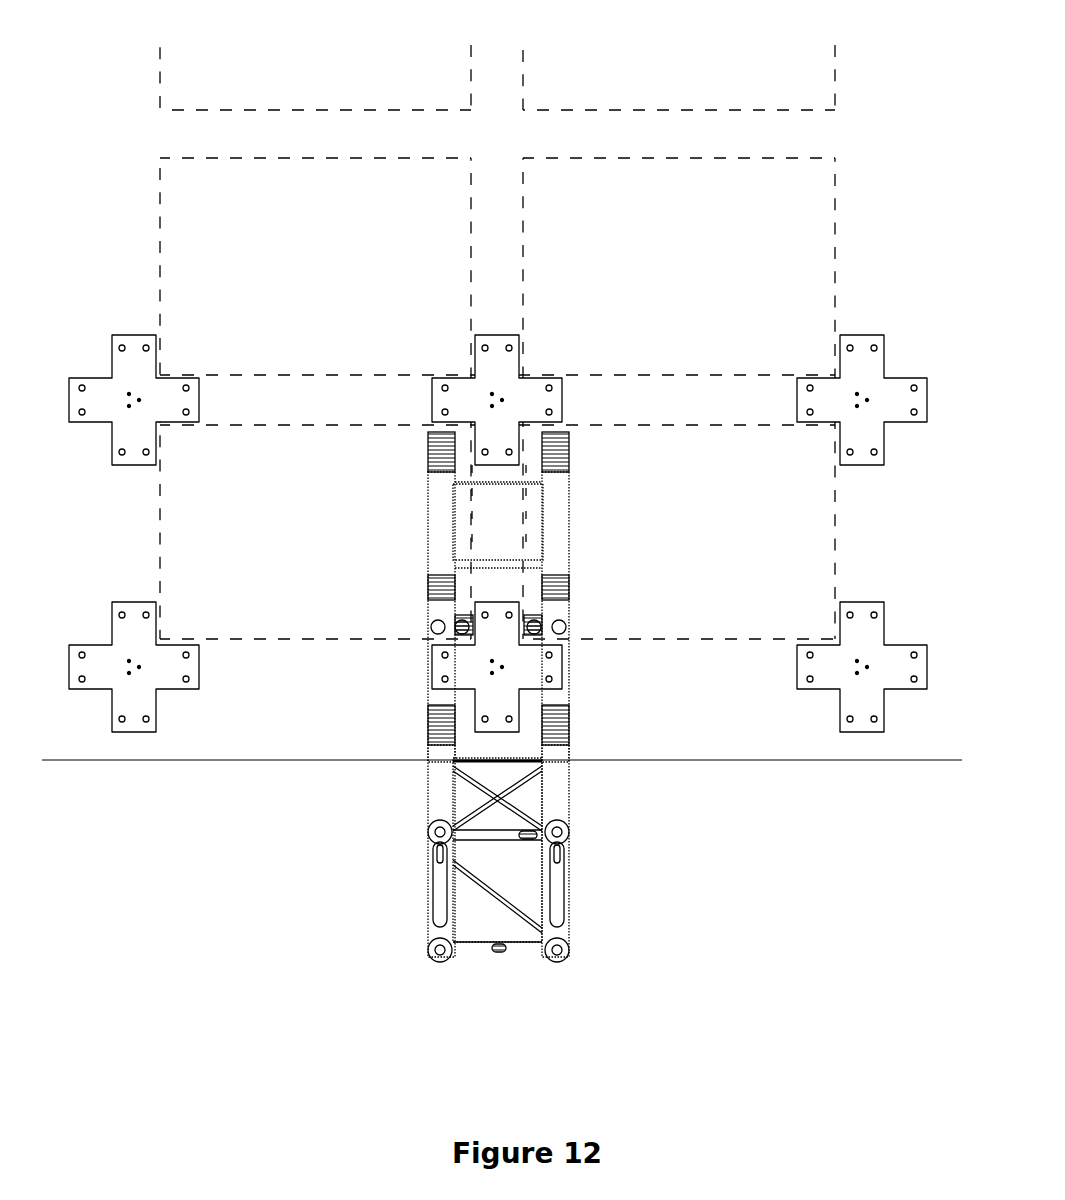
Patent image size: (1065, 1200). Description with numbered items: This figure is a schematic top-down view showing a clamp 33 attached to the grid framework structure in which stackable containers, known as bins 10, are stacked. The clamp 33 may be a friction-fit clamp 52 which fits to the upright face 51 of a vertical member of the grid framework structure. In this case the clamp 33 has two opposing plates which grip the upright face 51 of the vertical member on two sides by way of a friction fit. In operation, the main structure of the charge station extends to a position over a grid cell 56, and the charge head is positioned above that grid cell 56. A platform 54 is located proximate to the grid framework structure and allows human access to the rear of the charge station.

The bin 10 is at (305, 68).
The grid cell 56 is at (312, 240).
The upright face 51 is at (835, 375).
The friction-fit clamp 52 is at (432, 447).
The clamp 33 is at (567, 448).
The platform 54 is at (652, 910).